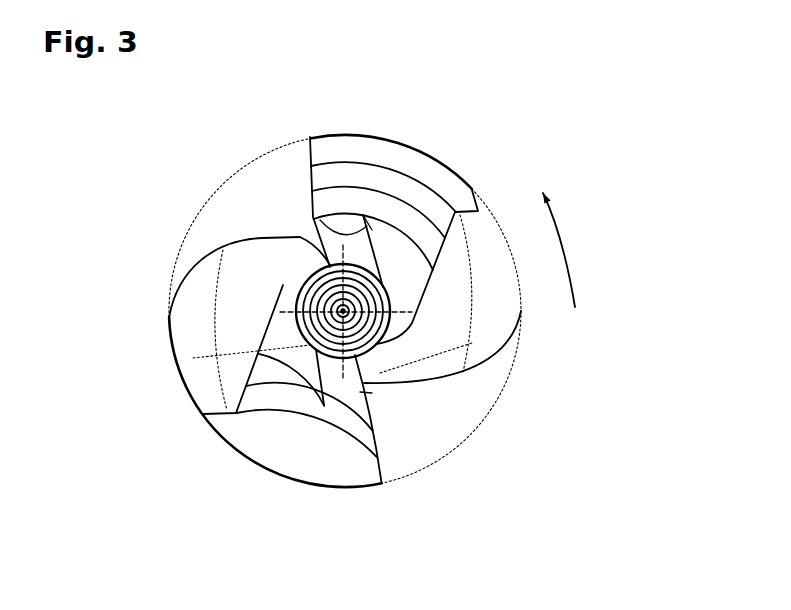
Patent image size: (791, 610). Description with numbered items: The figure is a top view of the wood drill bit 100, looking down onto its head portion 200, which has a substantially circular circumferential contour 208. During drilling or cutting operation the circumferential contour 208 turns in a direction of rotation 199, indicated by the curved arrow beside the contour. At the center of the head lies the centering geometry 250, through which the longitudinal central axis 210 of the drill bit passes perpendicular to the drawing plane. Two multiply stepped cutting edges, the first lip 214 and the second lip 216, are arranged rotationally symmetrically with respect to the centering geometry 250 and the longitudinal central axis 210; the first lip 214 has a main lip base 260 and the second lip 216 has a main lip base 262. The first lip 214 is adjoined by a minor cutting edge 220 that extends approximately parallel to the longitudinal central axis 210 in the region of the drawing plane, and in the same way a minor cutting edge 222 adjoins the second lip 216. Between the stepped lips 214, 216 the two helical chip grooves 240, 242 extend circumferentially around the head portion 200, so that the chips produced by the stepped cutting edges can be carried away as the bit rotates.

The wood drill bit 100 is at (352, 313).
The head portion 200 is at (352, 313).
The direction of rotation 199 is at (567, 250).
The circumferential contour 208 is at (520, 373).
The longitudinal central axis 210 is at (193, 358).
The multiply stepped cutting edge 214 is at (310, 190).
The multiply stepped cutting edge 216 is at (378, 440).
The minor cutting edge 220 is at (353, 209).
The minor cutting edge 222 is at (361, 455).
The helical chip groove 240 is at (215, 291).
The helical chip groove 242 is at (457, 393).
The centering geometry 250 is at (307, 288).
The main lip base 260 is at (365, 220).
The main lip base 262 is at (360, 392).